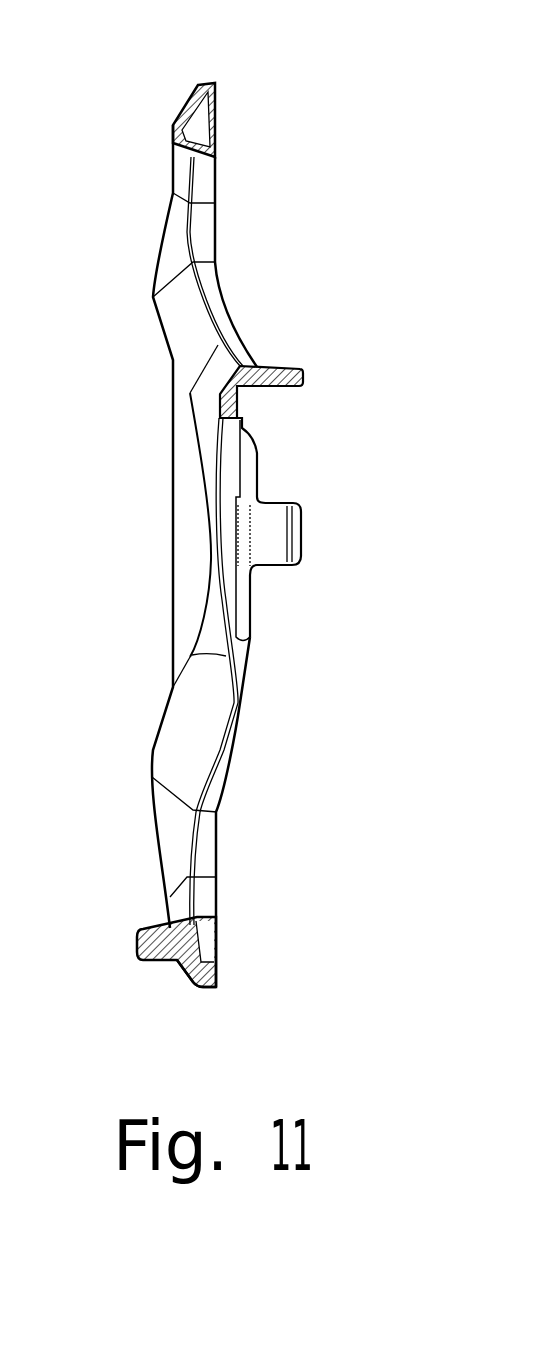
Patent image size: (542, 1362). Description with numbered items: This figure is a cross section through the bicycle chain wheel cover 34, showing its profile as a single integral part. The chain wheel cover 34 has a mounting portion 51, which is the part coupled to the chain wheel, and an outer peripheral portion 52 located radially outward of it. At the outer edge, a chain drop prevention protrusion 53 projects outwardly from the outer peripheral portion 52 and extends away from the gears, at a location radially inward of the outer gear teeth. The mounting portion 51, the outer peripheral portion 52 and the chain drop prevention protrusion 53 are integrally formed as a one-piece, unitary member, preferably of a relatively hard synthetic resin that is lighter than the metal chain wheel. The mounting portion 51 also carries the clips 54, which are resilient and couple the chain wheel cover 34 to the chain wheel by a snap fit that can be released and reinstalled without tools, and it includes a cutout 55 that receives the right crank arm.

The chain wheel cover 34 is at (263, 135).
The mounting portion 51 is at (183, 327).
The outer peripheral portion 52 is at (190, 975).
The chain drop prevention protrusion 53 is at (133, 940).
The clips 54 is at (285, 366).
The cutout 55 is at (232, 605).